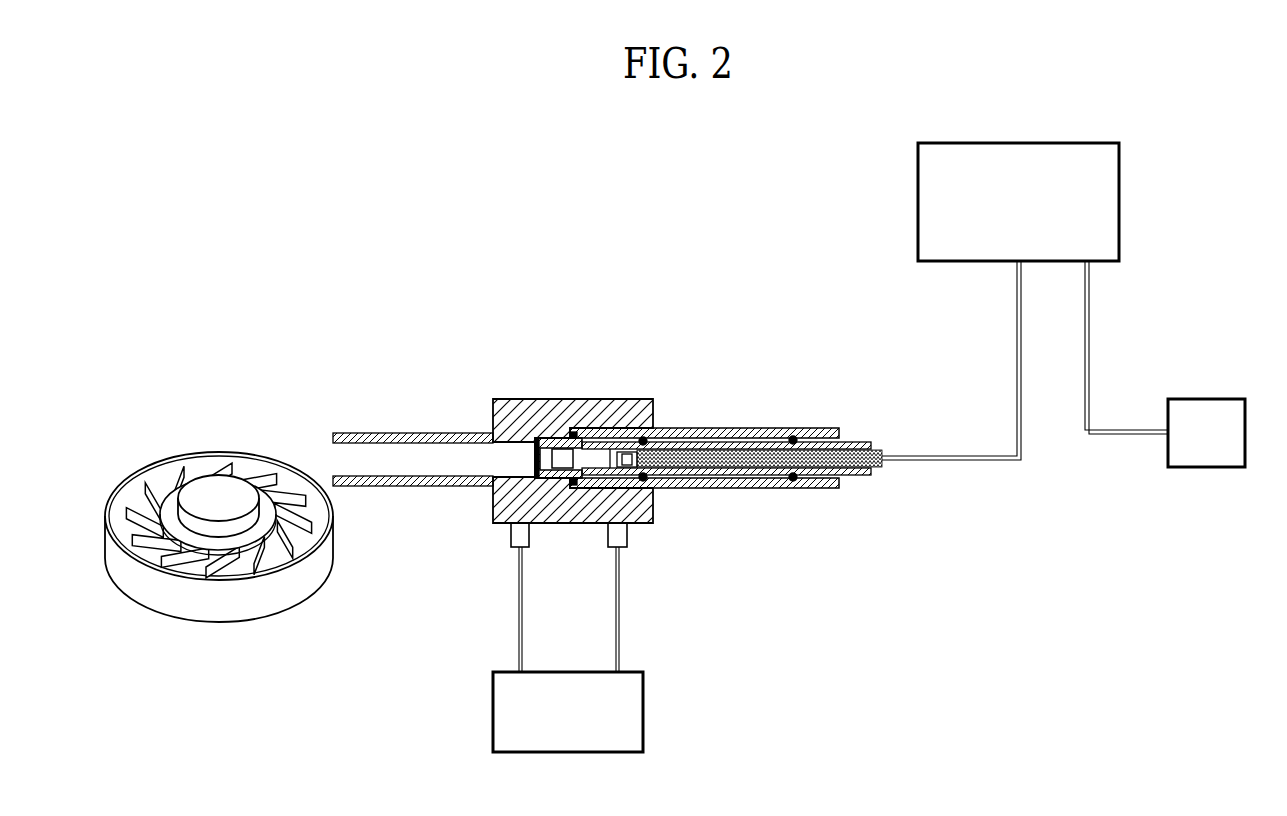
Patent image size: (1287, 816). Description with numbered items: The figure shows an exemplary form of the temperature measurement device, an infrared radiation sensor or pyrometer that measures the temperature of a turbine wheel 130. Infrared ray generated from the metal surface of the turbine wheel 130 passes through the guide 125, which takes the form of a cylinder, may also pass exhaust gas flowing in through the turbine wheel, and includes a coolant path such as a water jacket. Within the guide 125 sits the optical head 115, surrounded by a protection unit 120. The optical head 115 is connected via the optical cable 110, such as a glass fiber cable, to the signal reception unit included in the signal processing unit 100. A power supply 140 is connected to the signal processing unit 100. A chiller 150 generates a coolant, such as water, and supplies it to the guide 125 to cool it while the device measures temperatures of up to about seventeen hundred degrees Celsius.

The signal processing unit 100 is at (1119, 200).
The optical cable 110 is at (1015, 357).
The optical head 115 is at (825, 474).
The protection unit 120 is at (707, 428).
The guide 125 is at (573, 399).
The turbine wheel 130 is at (218, 452).
The power supply 140 is at (1208, 467).
The chiller 150 is at (644, 712).